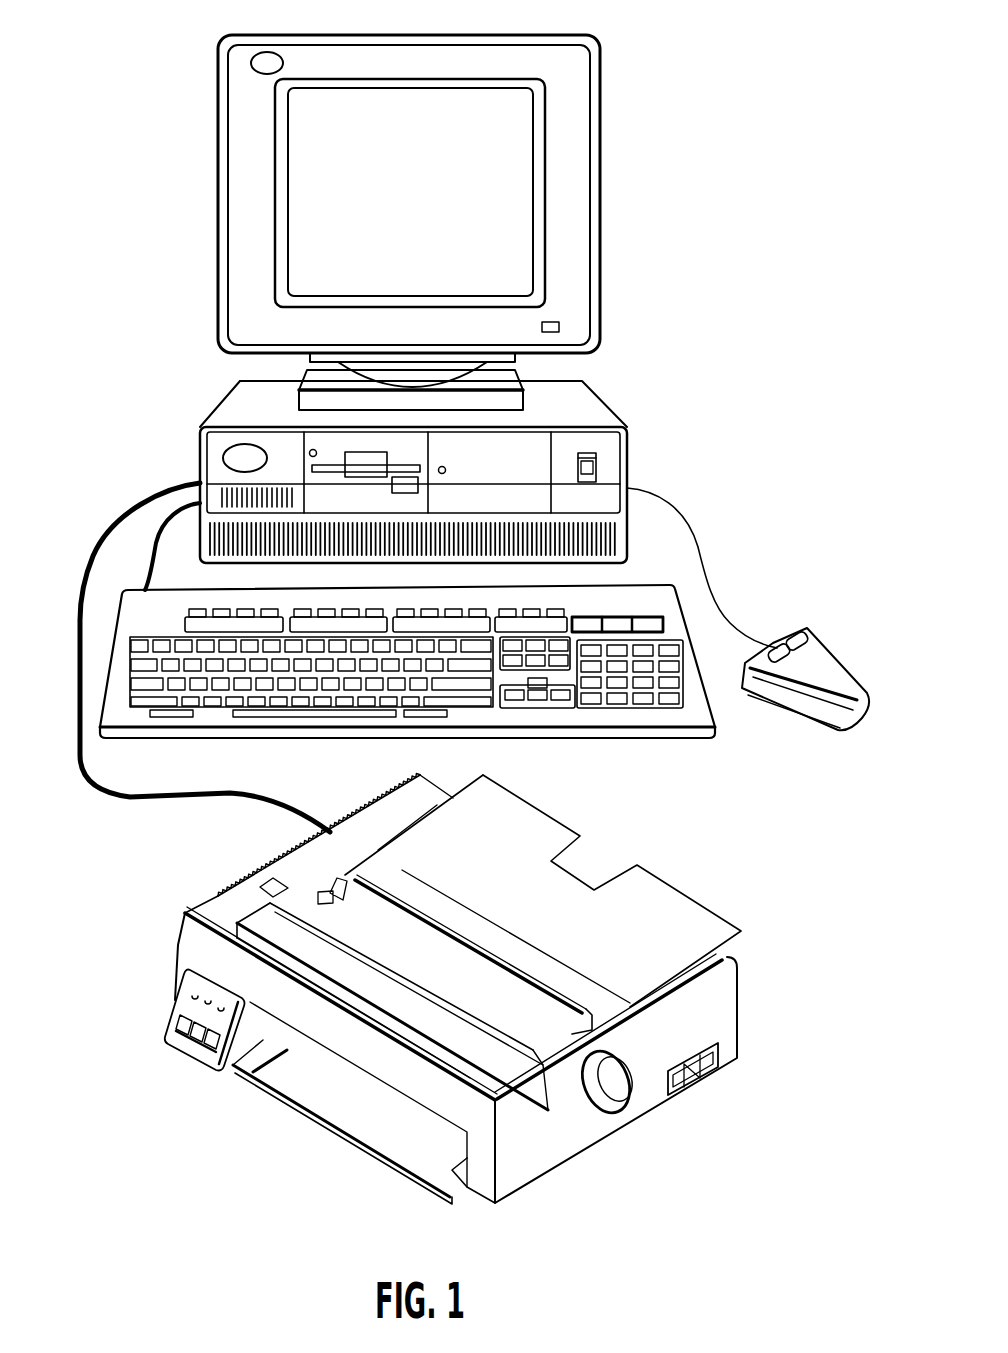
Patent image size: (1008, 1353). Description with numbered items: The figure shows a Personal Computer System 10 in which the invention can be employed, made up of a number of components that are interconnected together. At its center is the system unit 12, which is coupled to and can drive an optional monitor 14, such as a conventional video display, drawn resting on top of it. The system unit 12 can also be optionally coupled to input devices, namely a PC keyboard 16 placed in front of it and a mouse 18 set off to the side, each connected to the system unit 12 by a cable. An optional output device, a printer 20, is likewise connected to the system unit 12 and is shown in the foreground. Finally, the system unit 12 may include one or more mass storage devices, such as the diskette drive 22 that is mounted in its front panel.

The Personal Computer System 10 is at (299, 792).
The system unit 12 is at (630, 437).
The monitor 14 is at (600, 190).
The PC keyboard 16 is at (678, 723).
The mouse 18 is at (823, 658).
The printer 20 is at (552, 1140).
The diskette drive 22 is at (362, 470).